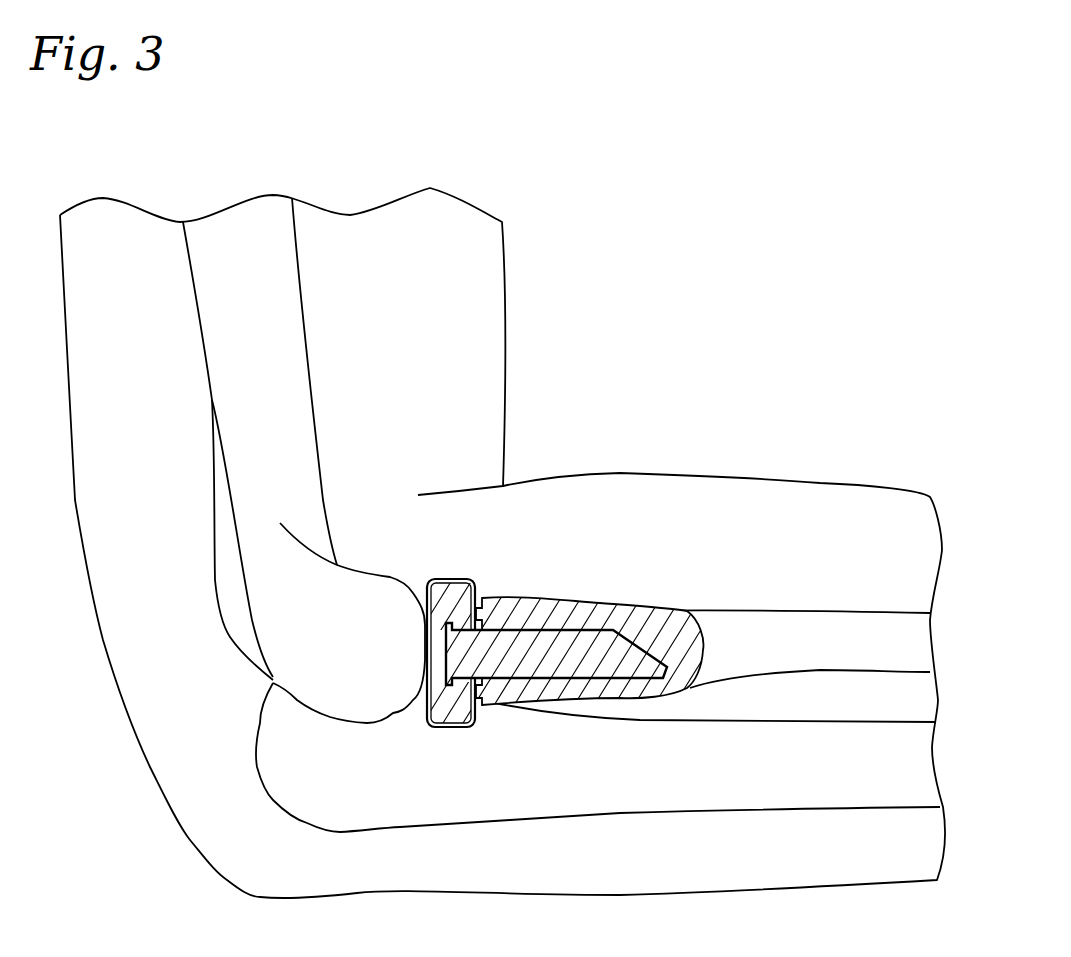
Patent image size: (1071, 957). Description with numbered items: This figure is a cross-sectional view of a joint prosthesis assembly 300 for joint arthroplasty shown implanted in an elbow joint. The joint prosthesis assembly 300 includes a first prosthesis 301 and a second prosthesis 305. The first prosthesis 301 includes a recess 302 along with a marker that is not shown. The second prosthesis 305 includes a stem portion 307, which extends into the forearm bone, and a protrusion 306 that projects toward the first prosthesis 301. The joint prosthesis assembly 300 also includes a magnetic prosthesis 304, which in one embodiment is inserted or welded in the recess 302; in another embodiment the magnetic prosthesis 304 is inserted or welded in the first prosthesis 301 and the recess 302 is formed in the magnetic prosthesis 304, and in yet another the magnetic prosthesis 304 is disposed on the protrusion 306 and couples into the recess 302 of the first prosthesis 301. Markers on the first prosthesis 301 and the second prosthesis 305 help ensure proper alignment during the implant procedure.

The joint prosthesis assembly 300 is at (385, 508).
The first prosthesis 301 is at (441, 550).
The recess 302 is at (452, 627).
The magnetic prosthesis 304 is at (456, 728).
The second prosthesis 305 is at (557, 600).
The protrusion 306 is at (427, 663).
The stem portion 307 is at (572, 607).